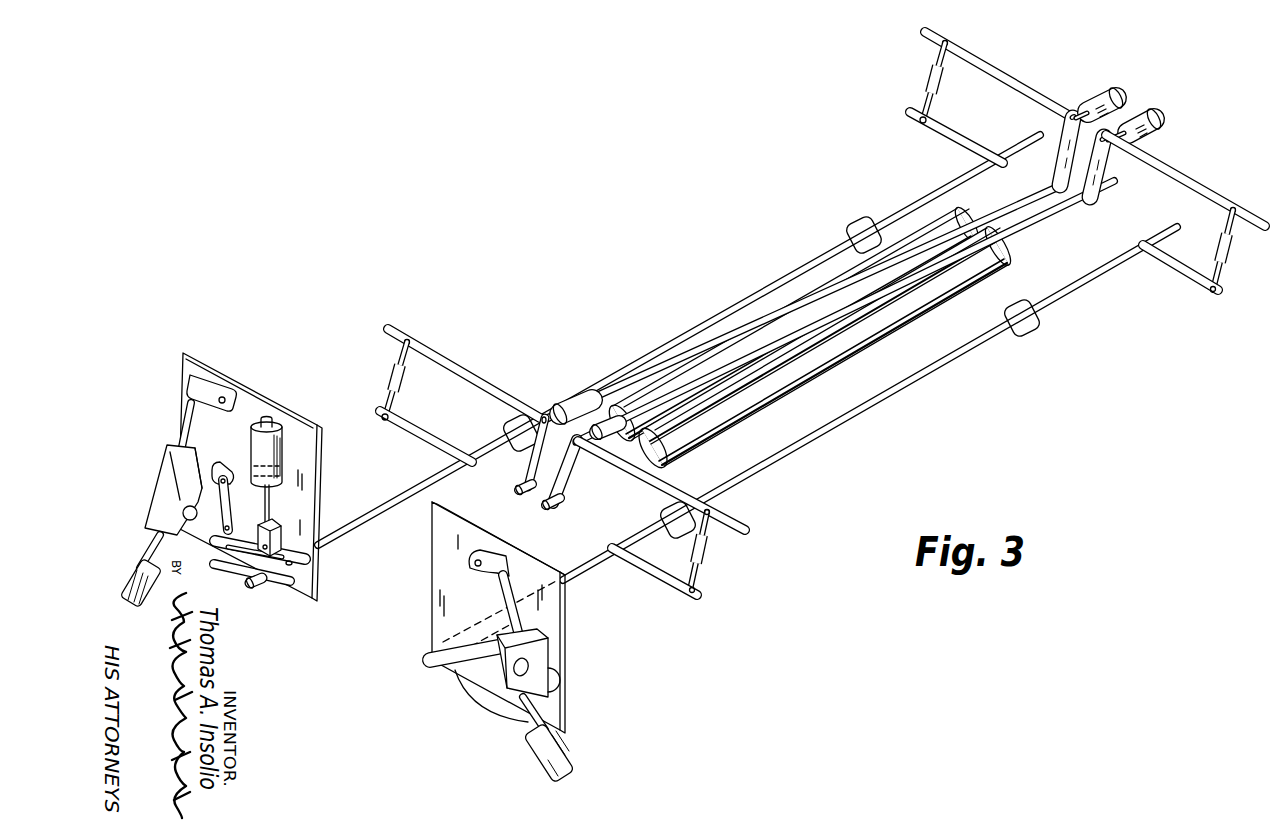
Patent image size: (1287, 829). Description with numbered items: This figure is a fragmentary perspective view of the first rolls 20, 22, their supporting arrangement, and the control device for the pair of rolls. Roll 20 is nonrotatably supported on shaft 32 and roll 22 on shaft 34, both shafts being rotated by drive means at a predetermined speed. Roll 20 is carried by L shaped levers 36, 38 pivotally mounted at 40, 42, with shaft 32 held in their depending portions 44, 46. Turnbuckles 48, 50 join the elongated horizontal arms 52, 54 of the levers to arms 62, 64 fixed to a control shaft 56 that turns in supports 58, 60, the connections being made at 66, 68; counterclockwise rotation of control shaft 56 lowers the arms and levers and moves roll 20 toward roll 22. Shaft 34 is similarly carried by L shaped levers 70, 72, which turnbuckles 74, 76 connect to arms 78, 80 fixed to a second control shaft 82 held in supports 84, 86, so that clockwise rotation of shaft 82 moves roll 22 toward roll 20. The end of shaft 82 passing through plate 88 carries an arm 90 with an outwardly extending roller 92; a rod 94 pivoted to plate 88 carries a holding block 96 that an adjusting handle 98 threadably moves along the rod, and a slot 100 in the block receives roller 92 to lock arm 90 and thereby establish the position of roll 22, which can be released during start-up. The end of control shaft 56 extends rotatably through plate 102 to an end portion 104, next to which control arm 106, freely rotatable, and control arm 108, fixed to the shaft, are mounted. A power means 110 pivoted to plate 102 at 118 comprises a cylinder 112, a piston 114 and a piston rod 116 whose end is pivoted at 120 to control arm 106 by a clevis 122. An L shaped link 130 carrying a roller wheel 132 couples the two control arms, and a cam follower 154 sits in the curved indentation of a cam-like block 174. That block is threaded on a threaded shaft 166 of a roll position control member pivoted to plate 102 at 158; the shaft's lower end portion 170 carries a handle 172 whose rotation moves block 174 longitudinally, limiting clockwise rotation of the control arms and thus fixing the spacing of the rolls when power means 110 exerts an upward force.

The first roll 20 is at (690, 364).
The first roll 22 is at (813, 374).
The shaft 32 is at (1007, 208).
The shaft 34 is at (1066, 220).
The L shaped lever 36 is at (978, 108).
The L shaped lever 38 is at (443, 396).
The pivot mounting 40 is at (1099, 92).
The pivot mounting 42 is at (565, 404).
The depending portion 44 is at (1061, 162).
The depending portion 46 is at (528, 474).
The turnbuckle 48 is at (946, 84).
The turnbuckle 50 is at (388, 378).
The elongated horizontal arm 52 is at (988, 68).
The elongated horizontal arm 54 is at (440, 349).
The control shaft 56 is at (912, 200).
The support 58 is at (851, 224).
The support 60 is at (508, 425).
The arm 62 is at (952, 138).
The arm 64 is at (435, 452).
The connection 66 is at (918, 122).
The connection 68 is at (388, 424).
The L shaped lever 70 is at (1200, 186).
The L shaped lever 72 is at (698, 489).
The turnbuckle 74 is at (1239, 254).
The turnbuckle 76 is at (712, 553).
The arm 78 is at (1165, 272).
The arm 80 is at (697, 594).
The control shaft 82 is at (972, 346).
The support 84 is at (1016, 306).
The support 86 is at (664, 516).
The plate 88 is at (536, 562).
The arm 90 is at (455, 680).
The roller 92 is at (527, 666).
The rod 94 is at (501, 600).
The holding block 96 is at (548, 654).
The adjusting handle 98 is at (562, 751).
The slot 100 is at (512, 712).
The plate 102 is at (258, 394).
The end portion 104 is at (258, 592).
The control arm 106 is at (314, 558).
The control arm 108 is at (246, 570).
The power means 110 is at (283, 449).
The cylinder 112 is at (249, 440).
The piston 114 is at (280, 471).
The piston rod 116 is at (272, 506).
The pivot 118 is at (268, 418).
The pivot 120 is at (300, 572).
The clevis 122 is at (282, 534).
The L shaped link 130 is at (235, 527).
The roller wheel 132 is at (238, 466).
The cam follower 154 is at (192, 521).
The pivot 158 is at (223, 396).
The threaded shaft 166 is at (185, 406).
The lower end portion 170 is at (146, 544).
The handle 172 is at (134, 574).
The cam-like block 174 is at (165, 459).